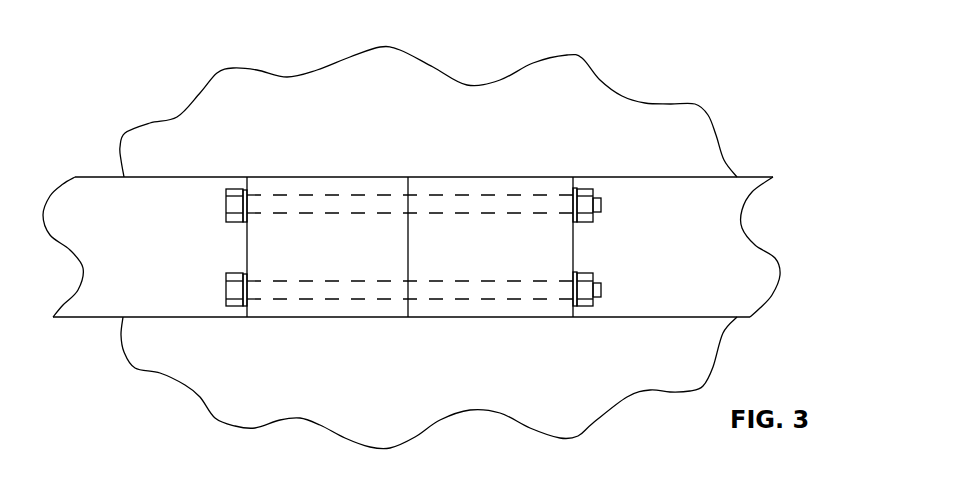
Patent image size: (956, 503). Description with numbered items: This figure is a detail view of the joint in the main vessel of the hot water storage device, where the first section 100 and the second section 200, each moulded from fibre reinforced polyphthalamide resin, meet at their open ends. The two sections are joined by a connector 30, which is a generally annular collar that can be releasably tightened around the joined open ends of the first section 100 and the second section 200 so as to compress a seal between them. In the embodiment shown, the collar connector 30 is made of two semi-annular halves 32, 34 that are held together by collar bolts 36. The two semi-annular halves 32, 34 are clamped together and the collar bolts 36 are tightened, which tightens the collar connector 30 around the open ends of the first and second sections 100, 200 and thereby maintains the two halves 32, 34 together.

The connector 30 is at (446, 208).
The semi-annular half 32 is at (665, 212).
The semi-annular half 34 is at (113, 222).
The collar bolts 36 is at (595, 310).
The first section 100 is at (408, 114).
The second section 200 is at (400, 373).